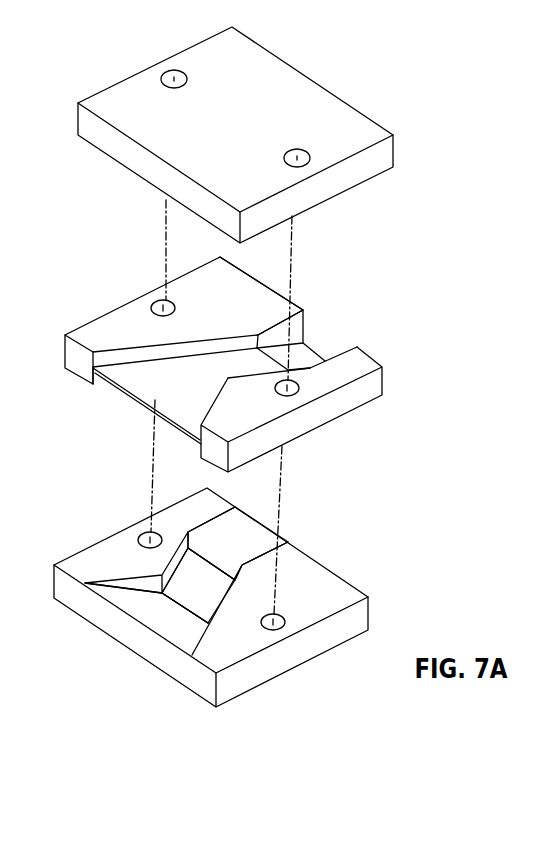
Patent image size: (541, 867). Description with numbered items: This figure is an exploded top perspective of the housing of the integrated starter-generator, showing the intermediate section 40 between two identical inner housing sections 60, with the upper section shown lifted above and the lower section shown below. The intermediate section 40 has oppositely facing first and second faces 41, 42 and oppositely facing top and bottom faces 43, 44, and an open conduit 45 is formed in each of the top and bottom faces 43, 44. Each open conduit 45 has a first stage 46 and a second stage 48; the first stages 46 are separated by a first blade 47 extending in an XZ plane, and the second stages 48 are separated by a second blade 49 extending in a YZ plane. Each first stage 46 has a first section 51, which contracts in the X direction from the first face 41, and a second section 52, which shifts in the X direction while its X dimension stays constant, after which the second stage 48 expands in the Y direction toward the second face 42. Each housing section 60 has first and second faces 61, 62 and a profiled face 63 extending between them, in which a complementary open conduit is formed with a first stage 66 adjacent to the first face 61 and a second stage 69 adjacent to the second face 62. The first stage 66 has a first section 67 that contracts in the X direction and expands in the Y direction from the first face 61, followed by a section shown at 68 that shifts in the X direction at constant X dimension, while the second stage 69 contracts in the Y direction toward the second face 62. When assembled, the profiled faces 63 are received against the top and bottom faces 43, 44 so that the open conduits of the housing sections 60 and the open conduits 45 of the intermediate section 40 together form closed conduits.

The intermediate section 40 is at (392, 390).
The first face 41 is at (77, 372).
The second face 42 is at (295, 305).
The top face 43 is at (122, 322).
The bottom face 44 is at (353, 413).
The open conduit 45 is at (331, 336).
The first stage 46 is at (133, 380).
The first blade 47 is at (142, 402).
The second stage 48 is at (313, 353).
The second blade 49 is at (305, 327).
The first section 51 is at (199, 410).
The second section 52 is at (256, 377).
The inner housing section 60 is at (406, 161).
The first face 61 is at (143, 172).
The second face 62 is at (332, 93).
The profiled face 63 is at (335, 588).
The first stage 66 is at (140, 608).
The first section 67 is at (181, 633).
The inclined face 68 is at (189, 603).
The second stage 69 is at (222, 555).